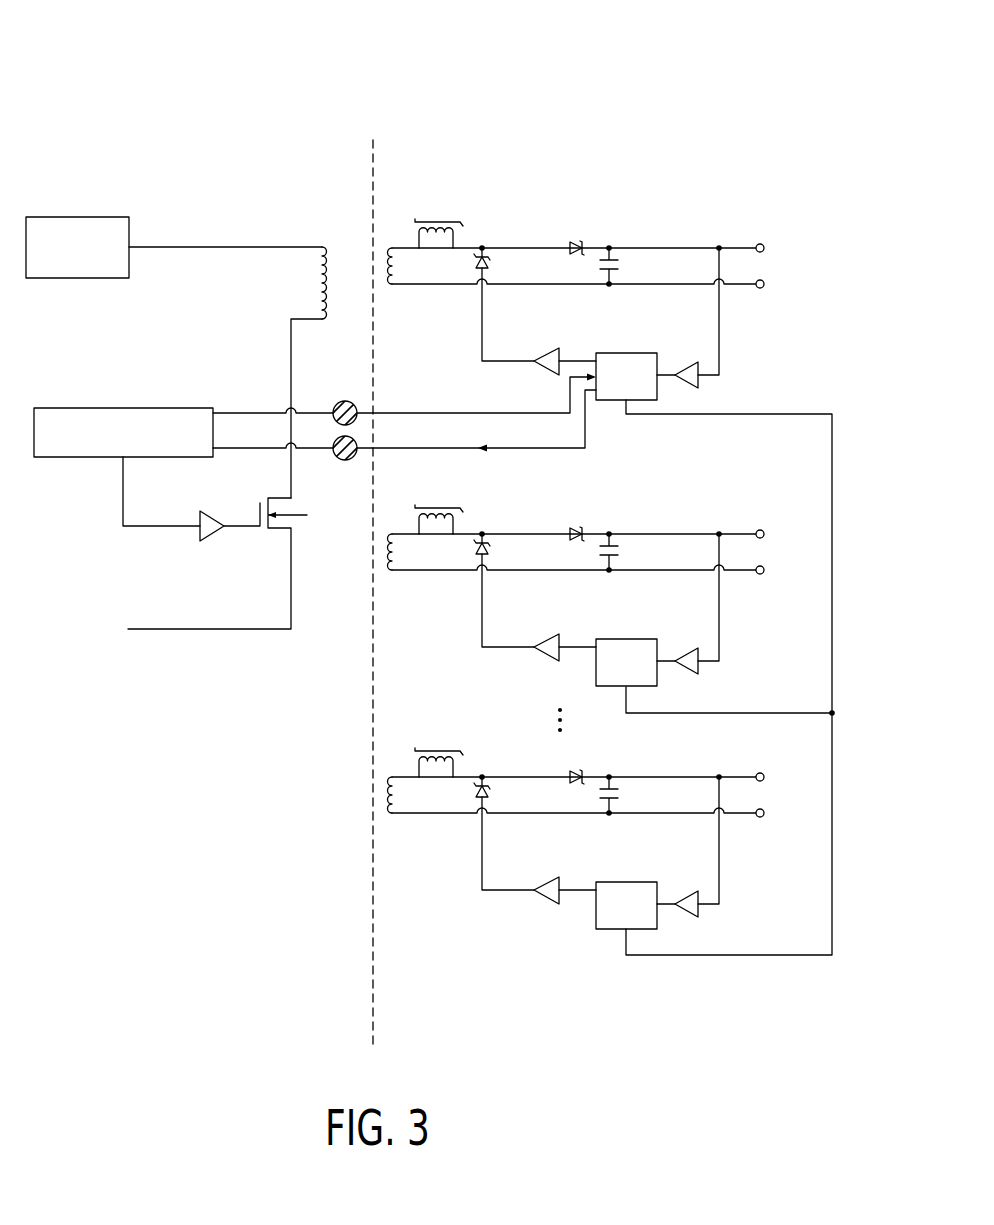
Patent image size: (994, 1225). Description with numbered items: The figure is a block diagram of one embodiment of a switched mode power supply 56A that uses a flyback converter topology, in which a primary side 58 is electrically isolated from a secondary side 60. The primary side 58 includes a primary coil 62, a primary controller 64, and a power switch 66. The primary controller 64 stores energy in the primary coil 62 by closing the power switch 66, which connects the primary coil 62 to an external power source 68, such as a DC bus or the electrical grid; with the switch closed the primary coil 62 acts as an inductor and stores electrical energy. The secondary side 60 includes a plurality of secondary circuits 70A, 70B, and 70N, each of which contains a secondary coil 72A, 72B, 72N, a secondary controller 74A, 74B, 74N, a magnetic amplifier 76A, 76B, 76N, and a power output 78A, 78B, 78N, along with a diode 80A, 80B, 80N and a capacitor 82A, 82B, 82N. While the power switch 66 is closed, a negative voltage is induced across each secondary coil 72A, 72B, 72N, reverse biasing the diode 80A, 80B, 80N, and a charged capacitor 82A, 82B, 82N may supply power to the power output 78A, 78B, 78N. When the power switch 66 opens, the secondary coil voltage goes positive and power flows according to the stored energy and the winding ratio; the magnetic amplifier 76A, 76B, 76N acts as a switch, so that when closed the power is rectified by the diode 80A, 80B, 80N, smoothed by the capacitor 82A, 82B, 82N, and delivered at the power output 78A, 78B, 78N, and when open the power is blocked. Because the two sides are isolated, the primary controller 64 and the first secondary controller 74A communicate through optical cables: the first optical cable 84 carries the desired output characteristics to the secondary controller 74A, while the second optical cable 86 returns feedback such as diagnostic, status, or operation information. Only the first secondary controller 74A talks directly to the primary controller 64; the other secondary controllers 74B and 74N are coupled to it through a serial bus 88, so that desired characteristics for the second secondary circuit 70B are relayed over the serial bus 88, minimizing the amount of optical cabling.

The switched mode power supply 56A is at (144, 50).
The primary side 58 is at (107, 172).
The secondary side 60 is at (710, 110).
The primary coil 62 is at (323, 246).
The primary controller 64 is at (85, 458).
The power switch 66 is at (273, 532).
The power source 68 is at (77, 279).
The first secondary circuit 70A is at (460, 343).
The second secondary circuit 70B is at (574, 615).
The secondary circuit 70N is at (574, 858).
The secondary coil 72A is at (392, 286).
The secondary coil 72B is at (423, 577).
The secondary coil 72N is at (424, 820).
The first secondary controller 74A is at (626, 353).
The second secondary controller 74B is at (654, 640).
The secondary controller 74N is at (655, 883).
The magnetic amplifier 76A is at (436, 222).
The magnetic amplifier 76B is at (464, 501).
The magnetic amplifier 76N is at (464, 744).
The power output 78A is at (770, 262).
The power output 78B is at (784, 533).
The power output 78N is at (785, 776).
The diode 80A is at (578, 245).
The diode 80B is at (616, 513).
The diode 80N is at (617, 756).
The capacitor 82A is at (618, 265).
The capacitor 82B is at (655, 552).
The capacitor 82N is at (656, 795).
The first optical cable 84 is at (313, 410).
The second optical cable 86 is at (313, 452).
The serial bus 88 is at (834, 414).